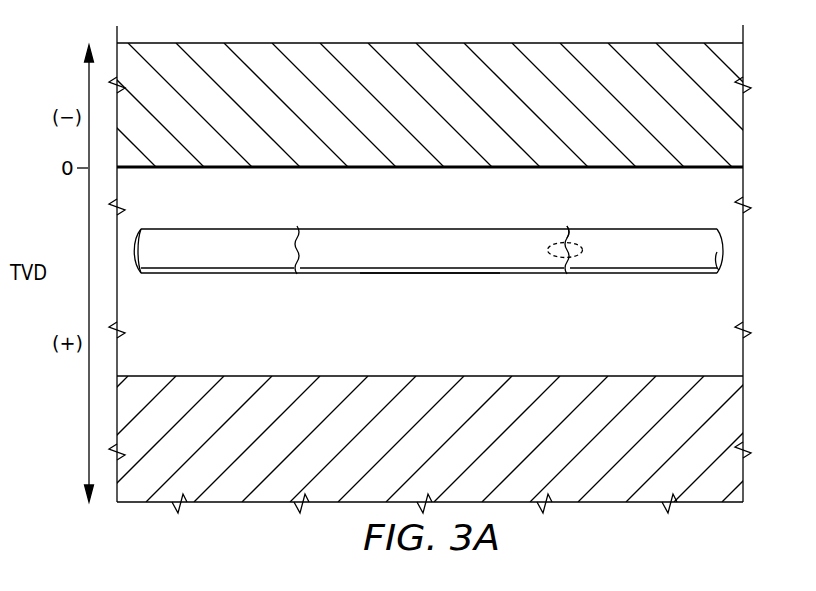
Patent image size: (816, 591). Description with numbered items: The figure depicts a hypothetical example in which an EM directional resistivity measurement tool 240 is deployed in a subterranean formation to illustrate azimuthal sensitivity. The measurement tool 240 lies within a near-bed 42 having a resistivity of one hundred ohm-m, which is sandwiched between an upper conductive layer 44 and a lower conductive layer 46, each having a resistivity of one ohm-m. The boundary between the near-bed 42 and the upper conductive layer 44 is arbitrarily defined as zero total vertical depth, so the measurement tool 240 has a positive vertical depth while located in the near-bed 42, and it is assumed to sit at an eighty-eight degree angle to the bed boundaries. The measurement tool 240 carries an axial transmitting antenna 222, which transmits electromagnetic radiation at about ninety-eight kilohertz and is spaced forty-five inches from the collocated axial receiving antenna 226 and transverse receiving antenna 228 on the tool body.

The conductive layer 44 is at (456, 123).
The near-bed 42 is at (632, 338).
The conductive layer 46 is at (457, 457).
The axial transmitting antenna 222 is at (299, 252).
The measurement tool 240 is at (432, 275).
The transverse receiving antenna 228 is at (547, 250).
The axial receiving antenna 226 is at (570, 232).